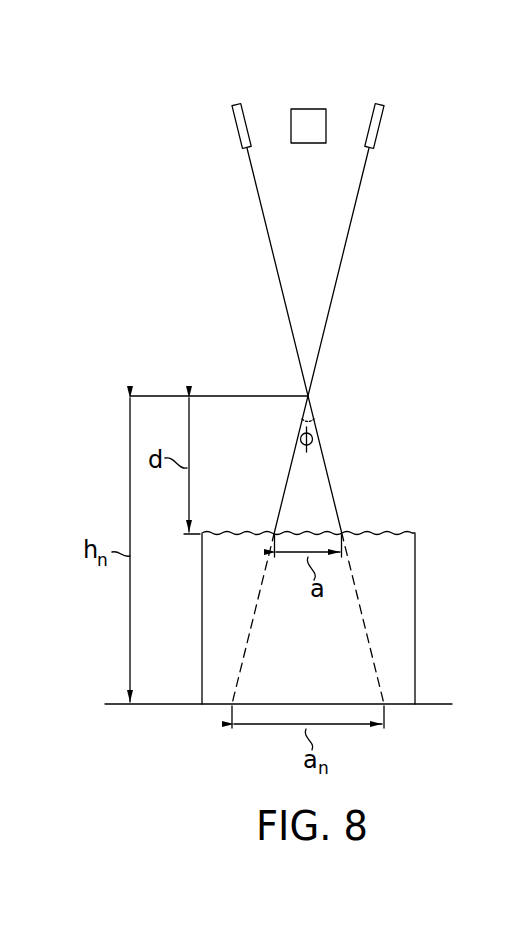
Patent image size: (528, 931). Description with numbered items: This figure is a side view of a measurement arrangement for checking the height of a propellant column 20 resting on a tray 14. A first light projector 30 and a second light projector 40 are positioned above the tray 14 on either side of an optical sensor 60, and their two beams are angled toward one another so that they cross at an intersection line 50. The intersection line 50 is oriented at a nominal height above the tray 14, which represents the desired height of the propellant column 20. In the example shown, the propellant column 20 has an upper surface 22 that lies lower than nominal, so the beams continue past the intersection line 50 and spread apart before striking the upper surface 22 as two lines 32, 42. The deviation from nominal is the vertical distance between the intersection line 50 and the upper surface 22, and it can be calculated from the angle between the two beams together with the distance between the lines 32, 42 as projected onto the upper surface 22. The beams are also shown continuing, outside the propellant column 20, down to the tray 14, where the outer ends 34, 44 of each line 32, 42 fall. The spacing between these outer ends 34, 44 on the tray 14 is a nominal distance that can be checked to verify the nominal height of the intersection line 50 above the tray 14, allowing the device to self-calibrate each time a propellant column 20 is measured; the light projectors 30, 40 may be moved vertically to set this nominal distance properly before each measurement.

The tray 14 is at (433, 706).
The propellant column 20 is at (322, 660).
The upper surface 22 is at (388, 531).
The first light projector 30 is at (238, 133).
The line 32 is at (345, 535).
The outer end 34 is at (385, 703).
The second light projector 40 is at (380, 138).
The line 42 is at (271, 537).
The outer end 44 is at (233, 703).
The intersection line 50 is at (310, 397).
The optical sensor 60 is at (305, 109).